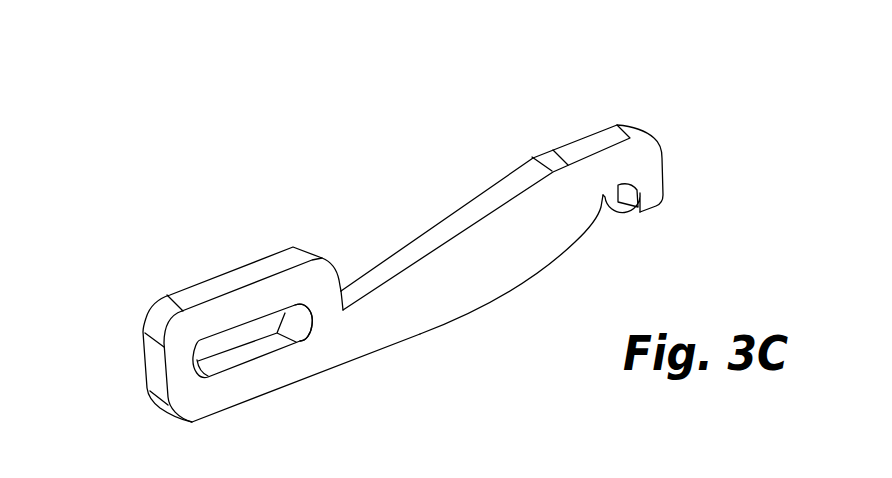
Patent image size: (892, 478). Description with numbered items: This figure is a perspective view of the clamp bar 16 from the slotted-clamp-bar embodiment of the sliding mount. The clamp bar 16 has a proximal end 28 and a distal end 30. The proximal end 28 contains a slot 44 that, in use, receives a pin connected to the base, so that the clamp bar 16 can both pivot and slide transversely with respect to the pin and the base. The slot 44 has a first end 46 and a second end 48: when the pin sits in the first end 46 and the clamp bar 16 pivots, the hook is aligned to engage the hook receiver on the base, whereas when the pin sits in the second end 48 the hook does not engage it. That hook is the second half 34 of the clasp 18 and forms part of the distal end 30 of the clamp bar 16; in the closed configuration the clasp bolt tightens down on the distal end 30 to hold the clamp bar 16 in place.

The clamp bar 16 is at (131, 147).
The proximal end 28 is at (265, 212).
The distal end 30 is at (516, 128).
The clasp 18 is at (685, 230).
The second half 34 is at (617, 200).
The slot 44 is at (262, 361).
The first end 46 is at (190, 358).
The second end 48 is at (312, 322).